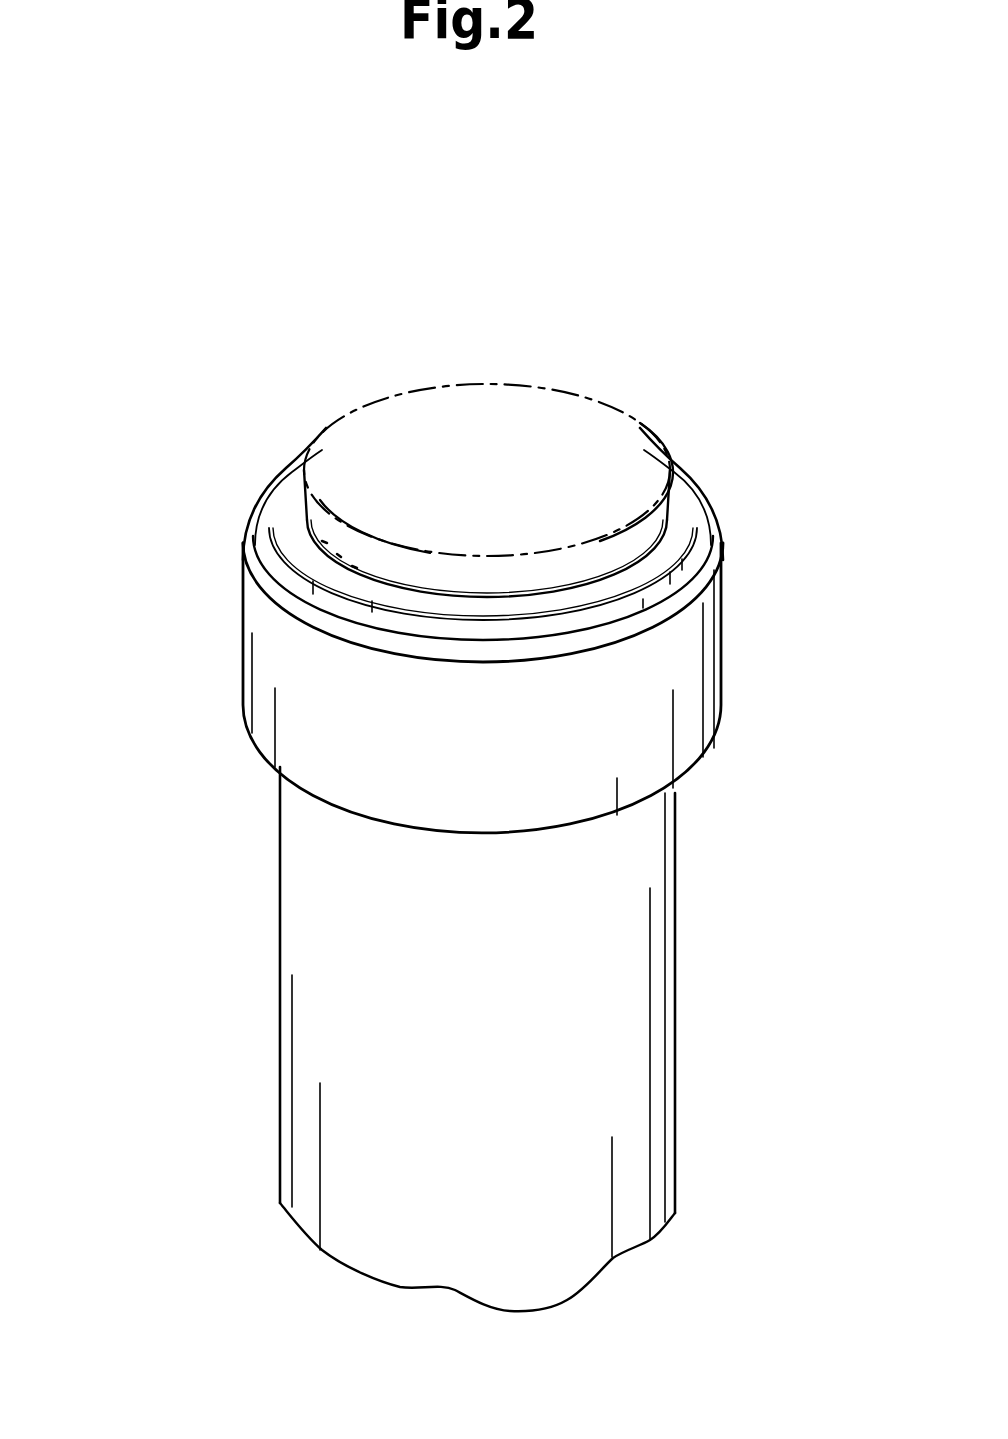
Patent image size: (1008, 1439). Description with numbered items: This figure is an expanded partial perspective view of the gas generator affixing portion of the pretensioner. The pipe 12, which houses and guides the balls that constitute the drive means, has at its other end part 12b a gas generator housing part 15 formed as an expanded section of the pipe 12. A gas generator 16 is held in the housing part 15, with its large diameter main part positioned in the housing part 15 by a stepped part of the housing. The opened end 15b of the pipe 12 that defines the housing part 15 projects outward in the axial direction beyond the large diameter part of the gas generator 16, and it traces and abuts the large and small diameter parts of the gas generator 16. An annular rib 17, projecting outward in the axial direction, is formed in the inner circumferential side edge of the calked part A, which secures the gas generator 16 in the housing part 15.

The calked part A is at (713, 466).
The pipe 12 is at (643, 919).
The other end part 12b is at (310, 885).
The gas generator housing part 15 is at (282, 668).
The opened end 15b is at (675, 460).
The gas generator 16 is at (457, 385).
The annular rib 17 is at (290, 520).